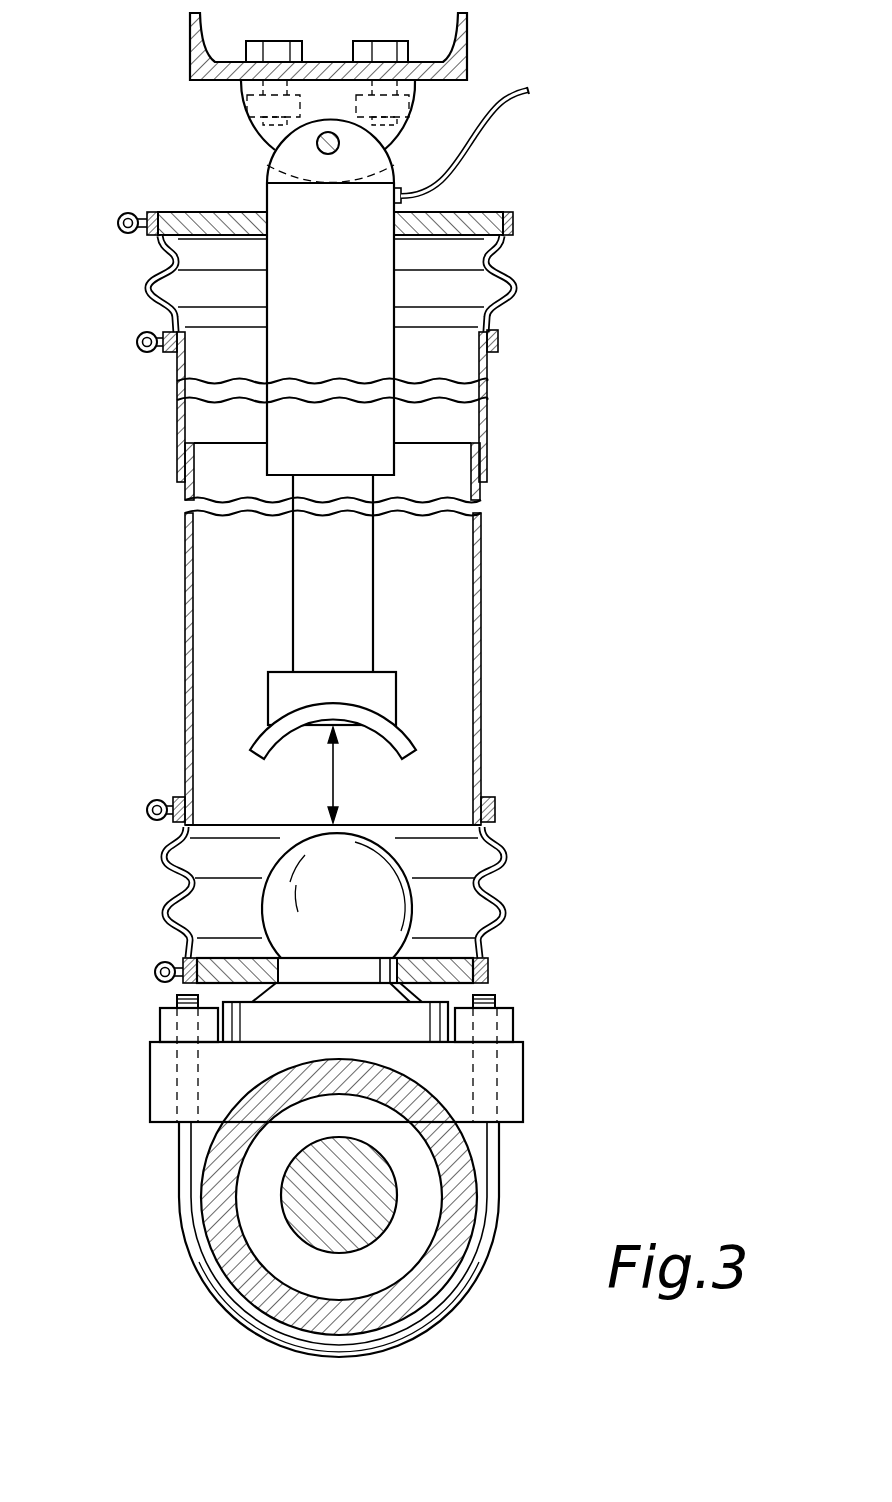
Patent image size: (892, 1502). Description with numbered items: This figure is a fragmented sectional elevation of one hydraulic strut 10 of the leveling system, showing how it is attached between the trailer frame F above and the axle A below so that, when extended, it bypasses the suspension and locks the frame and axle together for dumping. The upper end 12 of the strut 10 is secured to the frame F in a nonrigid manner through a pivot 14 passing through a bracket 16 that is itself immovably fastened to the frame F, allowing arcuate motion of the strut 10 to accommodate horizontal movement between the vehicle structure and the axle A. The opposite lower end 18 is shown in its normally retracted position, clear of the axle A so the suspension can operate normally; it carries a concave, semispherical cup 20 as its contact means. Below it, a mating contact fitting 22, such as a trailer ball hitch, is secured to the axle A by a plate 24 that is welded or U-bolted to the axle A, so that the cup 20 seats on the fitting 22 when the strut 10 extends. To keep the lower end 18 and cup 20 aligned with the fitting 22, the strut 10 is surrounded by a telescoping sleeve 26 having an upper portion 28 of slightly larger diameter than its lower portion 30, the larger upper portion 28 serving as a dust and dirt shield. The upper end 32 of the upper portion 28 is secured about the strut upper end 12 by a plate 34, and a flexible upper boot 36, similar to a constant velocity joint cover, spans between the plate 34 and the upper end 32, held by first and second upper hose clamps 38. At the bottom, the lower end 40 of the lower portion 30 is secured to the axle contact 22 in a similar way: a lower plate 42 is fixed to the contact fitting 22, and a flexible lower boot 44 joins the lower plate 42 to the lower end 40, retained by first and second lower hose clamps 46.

The hydraulic strut 10 is at (238, 546).
The upper end 12 is at (346, 225).
The pivot 14 is at (318, 146).
The bracket 16 is at (249, 116).
The lower end 18 is at (346, 665).
The concave cup 20 is at (258, 745).
The contact fitting 22 is at (356, 905).
The plate 24 is at (150, 1082).
The telescoping sleeve 26 is at (512, 549).
The upper portion 28 is at (487, 372).
The lower portion 30 is at (481, 662).
The upper end 32 is at (177, 372).
The plate 34 is at (192, 212).
The upper boot 36 is at (515, 283).
The upper hose clamps 38 is at (137, 236).
The lower end 40 is at (483, 795).
The lower plate 42 is at (247, 958).
The lower boot 44 is at (508, 900).
The lower hose clamps 46 is at (157, 822).
The trailer frame F is at (190, 52).
The axle A is at (180, 1210).